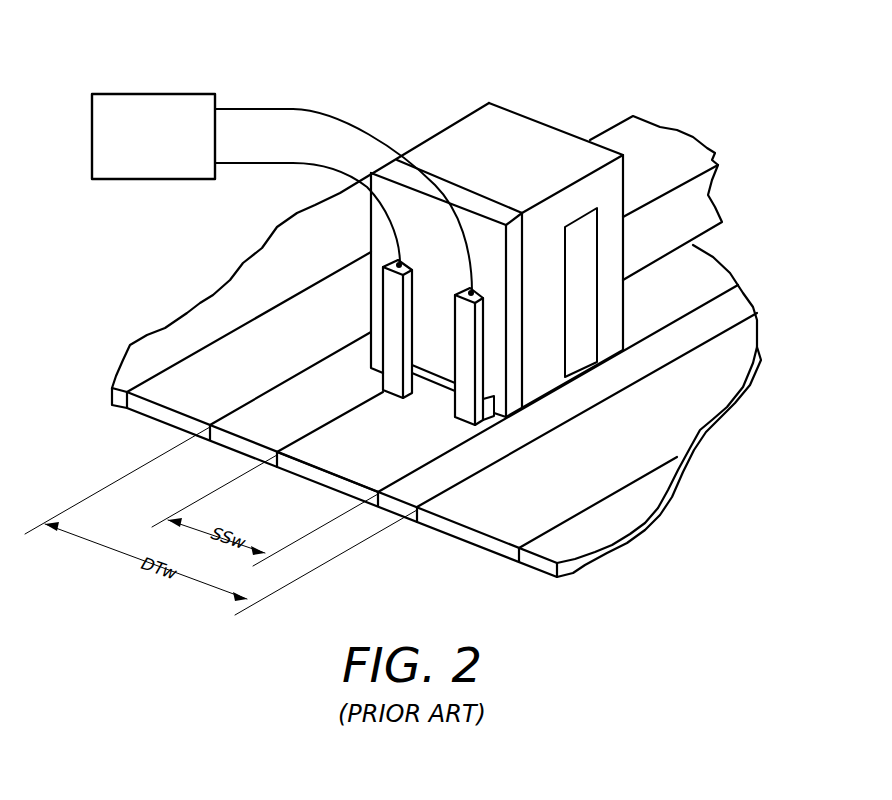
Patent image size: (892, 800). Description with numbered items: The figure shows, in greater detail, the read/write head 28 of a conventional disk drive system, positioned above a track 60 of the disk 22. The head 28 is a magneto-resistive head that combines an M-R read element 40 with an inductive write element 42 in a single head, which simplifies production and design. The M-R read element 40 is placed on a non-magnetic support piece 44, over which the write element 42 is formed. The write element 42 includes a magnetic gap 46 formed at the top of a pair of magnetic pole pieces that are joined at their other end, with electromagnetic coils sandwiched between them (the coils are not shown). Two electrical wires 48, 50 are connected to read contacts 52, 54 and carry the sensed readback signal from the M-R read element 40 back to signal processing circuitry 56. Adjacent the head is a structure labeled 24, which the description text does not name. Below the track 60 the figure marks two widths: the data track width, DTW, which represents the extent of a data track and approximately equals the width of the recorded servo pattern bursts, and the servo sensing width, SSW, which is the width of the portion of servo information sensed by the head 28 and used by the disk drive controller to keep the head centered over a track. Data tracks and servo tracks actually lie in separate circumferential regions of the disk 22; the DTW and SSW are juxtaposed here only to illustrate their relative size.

The disk 22 is at (148, 345).
The support arm 24 is at (690, 143).
The read/write head 28 is at (618, 86).
The M-R read element 40 is at (437, 388).
The inductive write element 42 is at (478, 118).
The non-magnetic support piece 44 is at (513, 403).
The magnetic gap 46 is at (582, 365).
The electrical wire 48 is at (263, 108).
The electrical wire 50 is at (265, 165).
The read contact 52 is at (455, 295).
The read contact 54 is at (398, 262).
The signal processing circuitry 56 is at (153, 92).
The track 60 is at (343, 465).